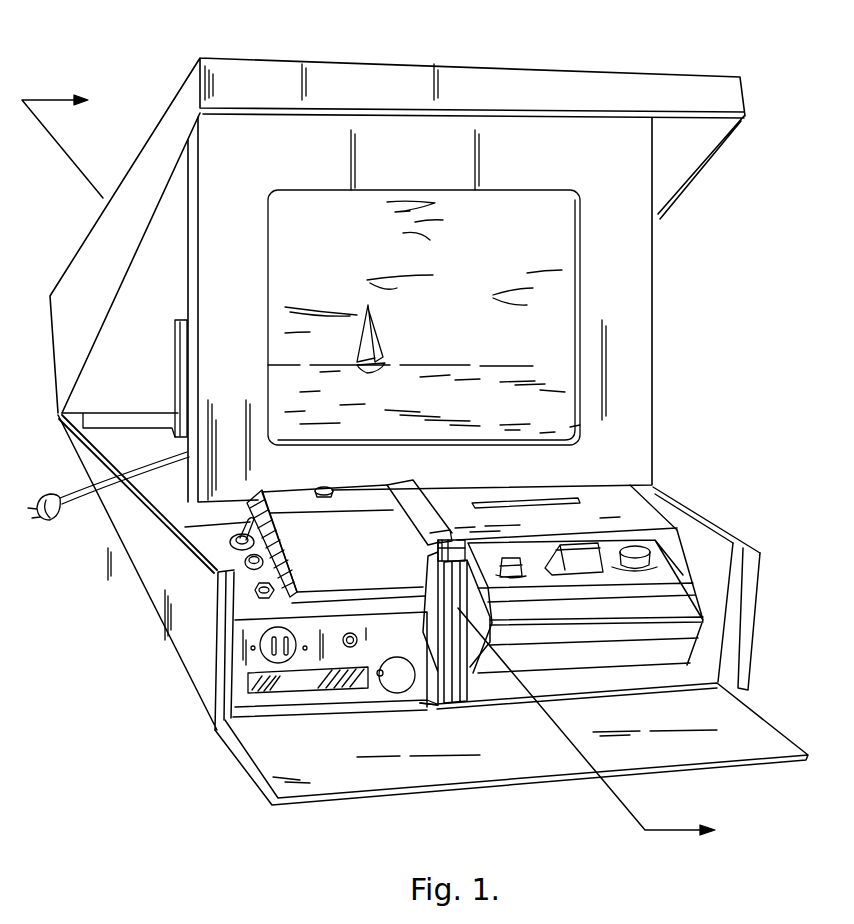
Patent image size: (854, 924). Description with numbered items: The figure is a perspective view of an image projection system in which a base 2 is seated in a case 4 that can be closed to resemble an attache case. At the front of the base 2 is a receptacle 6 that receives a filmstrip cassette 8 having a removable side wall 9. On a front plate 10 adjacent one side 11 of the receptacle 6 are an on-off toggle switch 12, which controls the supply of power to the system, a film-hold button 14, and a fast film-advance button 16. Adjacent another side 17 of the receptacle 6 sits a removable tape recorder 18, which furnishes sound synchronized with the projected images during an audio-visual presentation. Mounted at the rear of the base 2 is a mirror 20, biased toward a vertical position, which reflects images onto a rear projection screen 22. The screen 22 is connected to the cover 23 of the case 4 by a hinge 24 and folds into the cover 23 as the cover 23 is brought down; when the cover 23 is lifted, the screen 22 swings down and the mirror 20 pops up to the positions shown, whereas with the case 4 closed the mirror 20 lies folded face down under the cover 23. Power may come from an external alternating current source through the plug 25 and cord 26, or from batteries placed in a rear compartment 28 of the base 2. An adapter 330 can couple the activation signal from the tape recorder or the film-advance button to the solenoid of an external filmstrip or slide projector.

The base 2 is at (257, 707).
The case 4 is at (218, 672).
The receptacle 6 is at (425, 685).
The filmstrip cassette 8 is at (447, 690).
The removable side wall 9 is at (437, 583).
The front plate 10 is at (245, 608).
The one side of the receptacle 11 is at (427, 542).
The on-off toggle switch 12 is at (240, 530).
The film-hold button 14 is at (247, 555).
The fast film-advance button 16 is at (255, 588).
The another side of the receptacle 17 is at (464, 548).
The removable tape recorder 18 is at (600, 664).
The mirror 20 is at (183, 360).
The rear projection screen 22 is at (640, 249).
The cover 23 is at (185, 97).
The hinge 24 is at (170, 432).
The plug 25 is at (43, 518).
The cord 26 is at (68, 504).
The rear compartment 28 is at (98, 433).
The adapter 330 is at (358, 640).